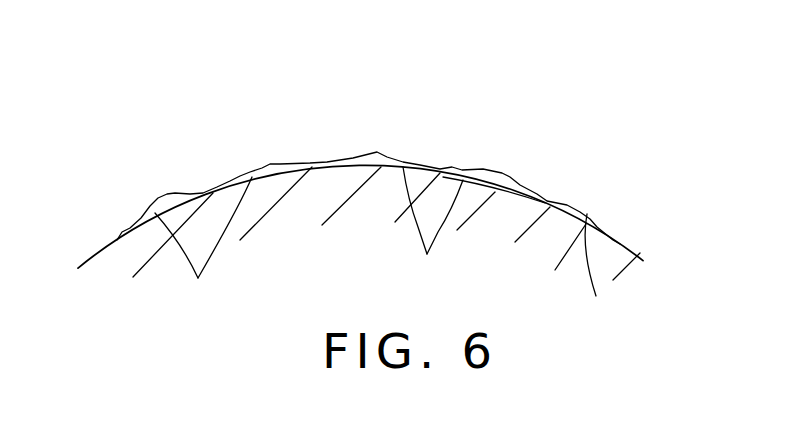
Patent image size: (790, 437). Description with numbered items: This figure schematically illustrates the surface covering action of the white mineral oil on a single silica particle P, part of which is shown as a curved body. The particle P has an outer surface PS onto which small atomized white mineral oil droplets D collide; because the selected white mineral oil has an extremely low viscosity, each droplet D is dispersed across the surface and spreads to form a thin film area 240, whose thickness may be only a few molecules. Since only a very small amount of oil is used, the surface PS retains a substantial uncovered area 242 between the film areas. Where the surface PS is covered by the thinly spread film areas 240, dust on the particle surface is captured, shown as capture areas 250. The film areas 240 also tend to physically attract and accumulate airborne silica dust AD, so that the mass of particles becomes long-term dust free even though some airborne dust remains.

The uncovered area 242 is at (205, 193).
The film area 240 is at (390, 250).
The capture area 250 is at (501, 196).
The droplet D is at (273, 165).
The airborne silica dust AD is at (133, 225).
The outer surface PS is at (435, 172).
The silica particle P is at (625, 251).